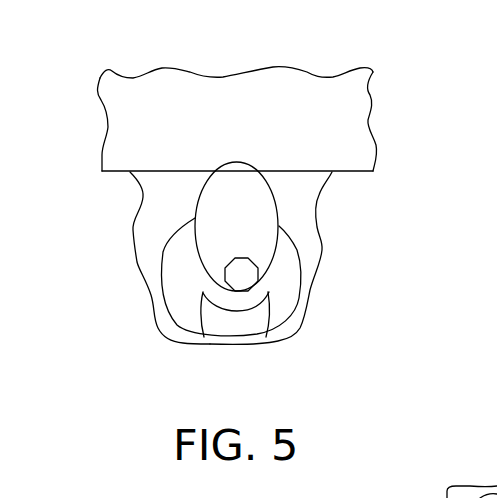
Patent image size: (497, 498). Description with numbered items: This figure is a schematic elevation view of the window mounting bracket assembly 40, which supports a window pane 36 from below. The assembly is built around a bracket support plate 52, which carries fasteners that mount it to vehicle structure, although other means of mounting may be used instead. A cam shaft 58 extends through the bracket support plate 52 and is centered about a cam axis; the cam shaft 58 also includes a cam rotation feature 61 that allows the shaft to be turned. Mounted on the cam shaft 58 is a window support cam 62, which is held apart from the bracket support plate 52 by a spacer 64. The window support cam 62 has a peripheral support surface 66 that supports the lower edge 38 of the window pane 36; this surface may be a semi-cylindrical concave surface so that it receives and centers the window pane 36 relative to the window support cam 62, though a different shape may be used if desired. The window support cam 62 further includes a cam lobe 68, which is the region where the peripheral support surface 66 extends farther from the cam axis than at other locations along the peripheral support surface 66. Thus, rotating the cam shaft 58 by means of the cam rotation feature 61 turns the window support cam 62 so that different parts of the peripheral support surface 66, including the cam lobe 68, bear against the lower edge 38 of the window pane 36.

The window pane 36 is at (322, 77).
The lower edge 38 is at (353, 172).
The window mounting bracket assembly 40 is at (116, 317).
The bracket support plate 52 is at (280, 334).
The cam shaft 58 is at (204, 337).
The cam rotation feature 61 is at (266, 337).
The window support cam 62 is at (162, 253).
The spacer 64 is at (296, 246).
The peripheral support surface 66 is at (273, 266).
The cam lobe 68 is at (235, 162).